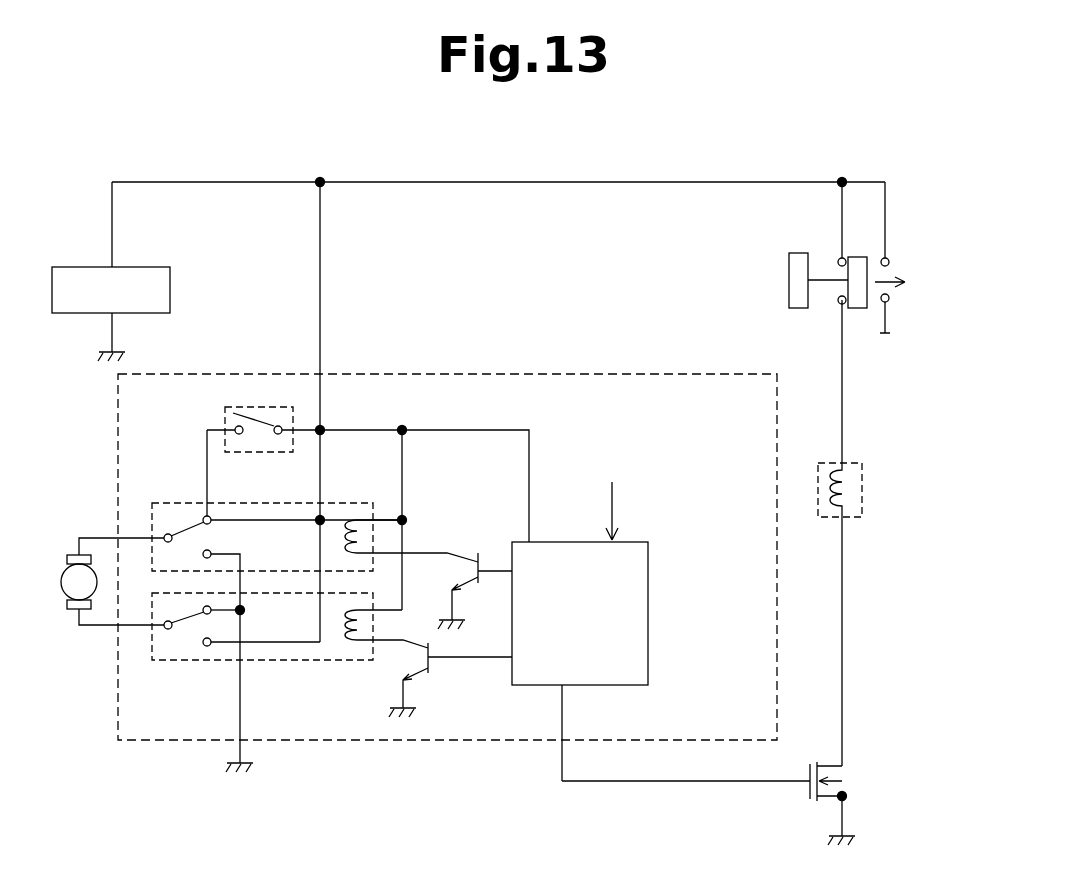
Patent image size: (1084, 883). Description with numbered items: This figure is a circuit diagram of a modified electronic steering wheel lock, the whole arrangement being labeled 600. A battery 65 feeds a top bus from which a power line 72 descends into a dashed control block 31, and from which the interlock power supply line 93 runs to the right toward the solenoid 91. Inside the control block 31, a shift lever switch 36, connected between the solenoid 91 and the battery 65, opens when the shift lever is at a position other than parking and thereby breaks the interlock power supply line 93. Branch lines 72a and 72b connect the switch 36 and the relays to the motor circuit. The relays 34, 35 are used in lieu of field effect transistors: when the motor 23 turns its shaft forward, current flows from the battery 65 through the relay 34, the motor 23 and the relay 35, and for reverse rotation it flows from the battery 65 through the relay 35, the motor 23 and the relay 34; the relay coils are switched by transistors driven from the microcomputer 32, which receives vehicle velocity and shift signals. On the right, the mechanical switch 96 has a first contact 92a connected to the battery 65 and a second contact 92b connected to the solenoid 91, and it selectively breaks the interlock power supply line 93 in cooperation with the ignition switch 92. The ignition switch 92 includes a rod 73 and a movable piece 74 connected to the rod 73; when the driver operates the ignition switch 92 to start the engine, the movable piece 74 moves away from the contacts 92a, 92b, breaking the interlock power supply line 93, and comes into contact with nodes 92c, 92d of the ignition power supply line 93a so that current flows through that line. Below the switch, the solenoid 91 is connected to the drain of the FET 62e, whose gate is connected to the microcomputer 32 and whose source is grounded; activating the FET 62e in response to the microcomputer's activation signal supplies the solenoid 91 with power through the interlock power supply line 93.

The motor drive circuit 600 is at (817, 155).
The battery 65 is at (89, 266).
The interlock power supply line 93 is at (520, 183).
The ignition power supply line 93a is at (887, 205).
The power line 72 is at (322, 283).
The connecting line 72a is at (207, 458).
The connecting line 72b is at (320, 630).
The control unit 31 is at (533, 371).
The shift lever switch 36 is at (268, 407).
The relay 34 is at (338, 504).
The relay 35 is at (273, 661).
The motor 23 is at (56, 558).
The microcomputer 32 is at (608, 687).
The ignition switch 92 is at (830, 284).
The first contact 92a is at (838, 257).
The second contact 92b is at (845, 310).
The node 92c is at (915, 253).
The node 92d is at (888, 301).
The rod 73 is at (820, 276).
The movable piece 74 is at (866, 255).
The mechanical switch 96 is at (827, 323).
The solenoid 91 is at (865, 480).
The FET 62e is at (802, 790).